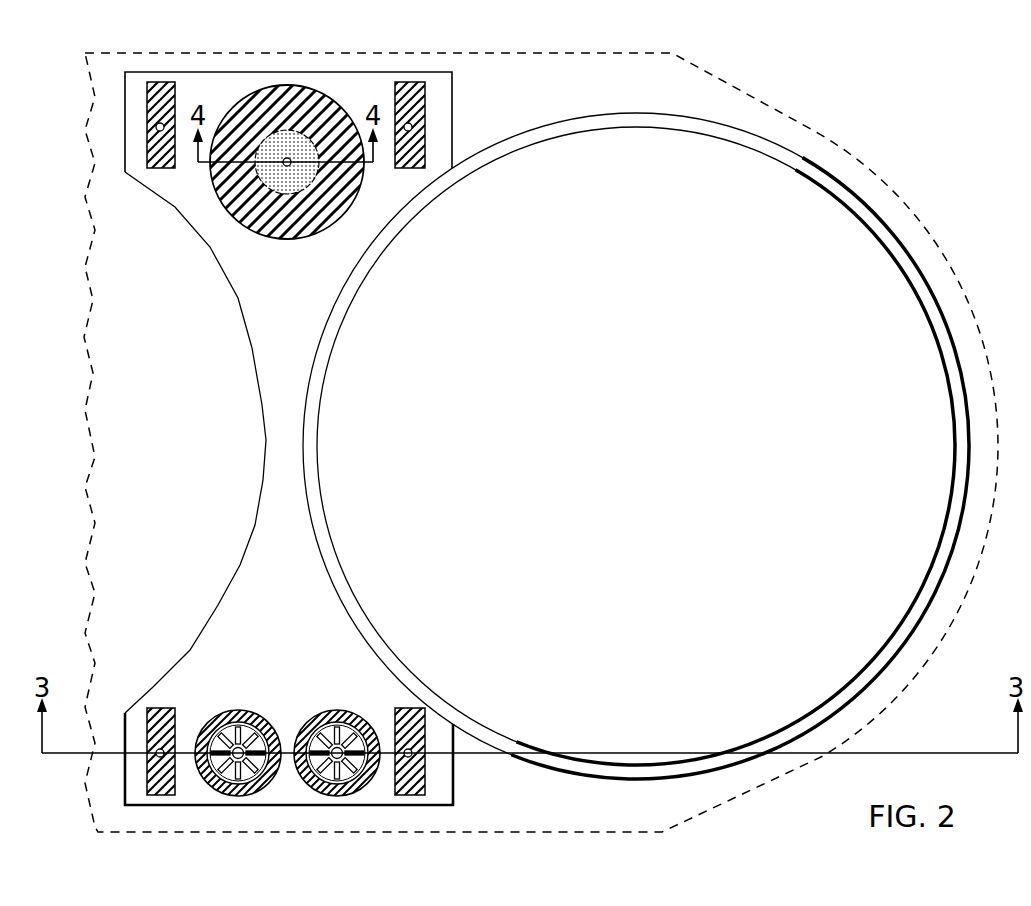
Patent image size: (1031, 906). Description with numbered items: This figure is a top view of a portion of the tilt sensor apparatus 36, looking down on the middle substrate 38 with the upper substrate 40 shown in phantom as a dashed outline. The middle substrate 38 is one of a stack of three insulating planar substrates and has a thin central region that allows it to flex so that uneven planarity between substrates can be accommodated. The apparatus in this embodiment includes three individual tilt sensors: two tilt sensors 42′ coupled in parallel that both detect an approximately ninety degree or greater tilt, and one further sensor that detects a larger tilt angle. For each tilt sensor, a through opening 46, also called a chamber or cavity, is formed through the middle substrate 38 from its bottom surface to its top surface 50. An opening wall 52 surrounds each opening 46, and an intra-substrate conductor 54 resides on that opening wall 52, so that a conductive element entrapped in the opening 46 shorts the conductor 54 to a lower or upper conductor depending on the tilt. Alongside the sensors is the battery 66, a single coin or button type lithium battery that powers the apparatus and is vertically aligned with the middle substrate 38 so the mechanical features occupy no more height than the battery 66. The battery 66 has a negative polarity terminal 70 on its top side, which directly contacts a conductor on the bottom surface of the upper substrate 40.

The tilt sensor apparatus 36 is at (276, 428).
The middle substrate 38 is at (452, 92).
The upper substrate 40 is at (746, 92).
The tilt sensor 42′ is at (218, 717).
The through opening 46 is at (232, 203).
The top surface 50 is at (131, 72).
The opening wall 52 is at (247, 727).
The intra-substrate conductor 54 is at (333, 225).
The battery 66 is at (689, 122).
The negative polarity terminal 70 is at (560, 146).